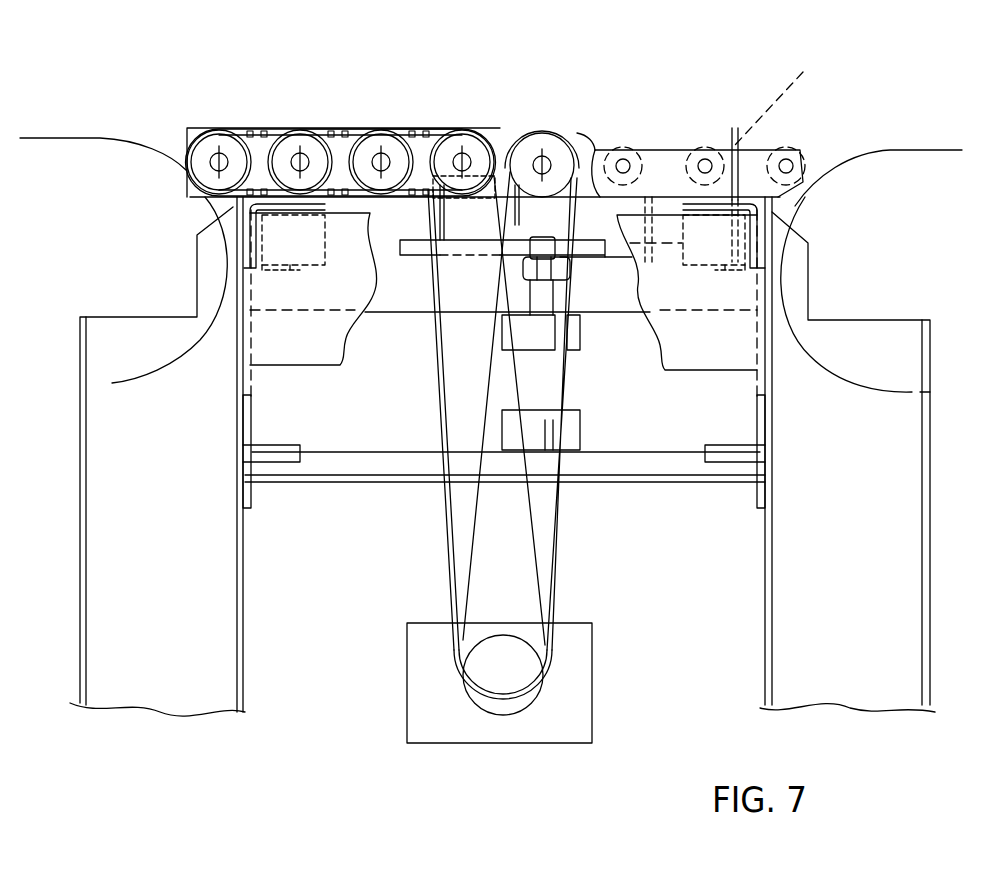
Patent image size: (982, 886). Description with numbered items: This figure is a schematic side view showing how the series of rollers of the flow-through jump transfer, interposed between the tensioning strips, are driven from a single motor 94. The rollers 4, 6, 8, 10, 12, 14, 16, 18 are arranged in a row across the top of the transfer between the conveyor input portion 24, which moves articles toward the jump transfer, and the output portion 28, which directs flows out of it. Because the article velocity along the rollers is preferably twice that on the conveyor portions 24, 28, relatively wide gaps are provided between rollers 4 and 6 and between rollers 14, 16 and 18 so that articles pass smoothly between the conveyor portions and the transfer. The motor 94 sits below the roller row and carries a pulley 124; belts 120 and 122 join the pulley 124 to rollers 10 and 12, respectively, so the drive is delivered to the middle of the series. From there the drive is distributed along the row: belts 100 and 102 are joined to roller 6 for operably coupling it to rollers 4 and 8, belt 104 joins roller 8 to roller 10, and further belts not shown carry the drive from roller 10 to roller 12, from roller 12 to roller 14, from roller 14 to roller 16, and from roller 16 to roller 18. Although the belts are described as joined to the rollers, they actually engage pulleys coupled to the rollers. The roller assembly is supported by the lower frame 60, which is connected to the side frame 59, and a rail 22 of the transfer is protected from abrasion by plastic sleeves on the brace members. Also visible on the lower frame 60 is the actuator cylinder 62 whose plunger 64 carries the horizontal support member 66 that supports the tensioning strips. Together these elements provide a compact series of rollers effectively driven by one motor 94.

The roller 4 is at (215, 143).
The roller 6 is at (298, 143).
The roller 8 is at (380, 143).
The roller 10 is at (465, 145).
The roller 12 is at (543, 143).
The roller 14 is at (622, 150).
The roller 16 is at (704, 150).
The roller 18 is at (790, 150).
The rail 22 is at (785, 98).
The input portion 24 is at (956, 211).
The output portion 28 is at (108, 250).
The side frame 59 is at (793, 280).
The lower frame 60 is at (660, 422).
The actuator cylinder 62 is at (578, 342).
The plunger 64 is at (552, 295).
The horizontal support member 66 is at (430, 255).
The motor 94 is at (582, 713).
The belt 100 is at (268, 132).
The belt 102 is at (353, 128).
The belt 104 is at (443, 130).
The belt 120 is at (450, 520).
The belt 122 is at (556, 530).
The pulley 124 is at (516, 703).